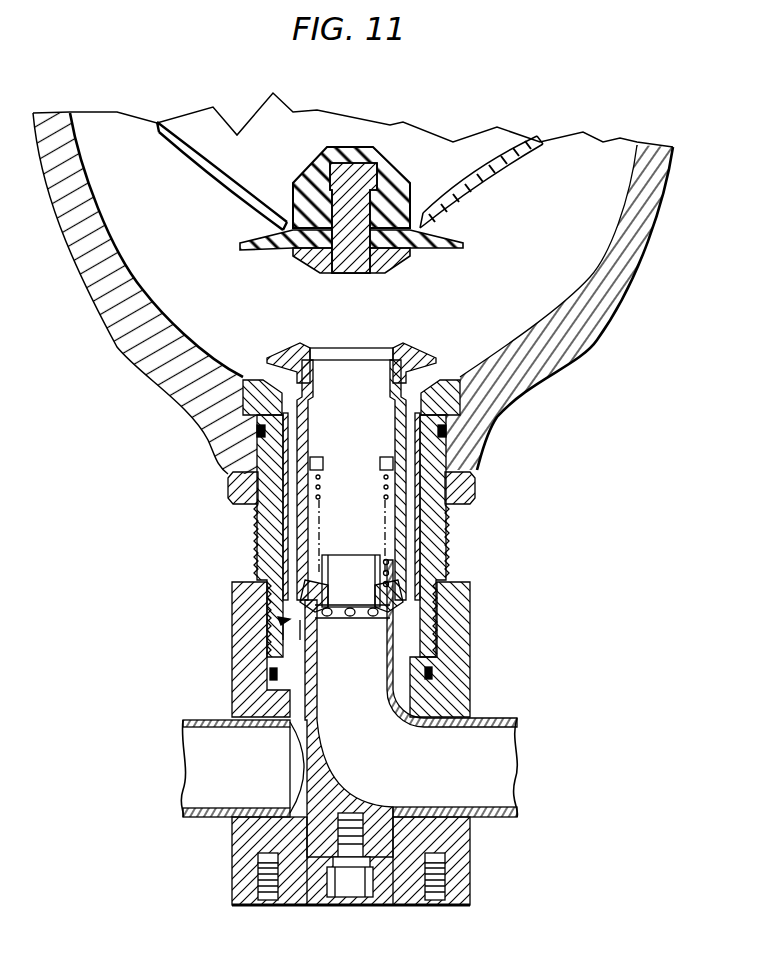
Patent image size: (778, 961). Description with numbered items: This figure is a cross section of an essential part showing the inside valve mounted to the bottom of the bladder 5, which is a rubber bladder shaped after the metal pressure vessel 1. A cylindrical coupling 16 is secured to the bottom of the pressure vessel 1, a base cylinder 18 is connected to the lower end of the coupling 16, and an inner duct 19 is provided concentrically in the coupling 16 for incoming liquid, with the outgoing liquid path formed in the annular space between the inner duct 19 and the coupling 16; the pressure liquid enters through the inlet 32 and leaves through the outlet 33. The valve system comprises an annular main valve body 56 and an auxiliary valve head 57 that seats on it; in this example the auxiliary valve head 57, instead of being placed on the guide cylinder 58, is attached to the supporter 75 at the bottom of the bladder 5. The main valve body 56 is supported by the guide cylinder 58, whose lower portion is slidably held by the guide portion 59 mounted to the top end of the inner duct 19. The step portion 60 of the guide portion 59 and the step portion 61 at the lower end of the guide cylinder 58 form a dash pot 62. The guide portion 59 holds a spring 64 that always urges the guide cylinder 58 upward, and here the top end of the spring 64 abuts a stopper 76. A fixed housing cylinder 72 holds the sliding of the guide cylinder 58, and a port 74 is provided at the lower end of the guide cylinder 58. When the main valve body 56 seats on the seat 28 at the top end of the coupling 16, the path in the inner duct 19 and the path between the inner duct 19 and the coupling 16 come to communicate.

The pressure vessel 1 is at (592, 320).
The bladder 5 is at (476, 200).
The cylindrical coupling 16 is at (433, 527).
The base cylinder 18 is at (240, 863).
The inner duct 19 is at (393, 668).
The seat 28 is at (437, 380).
The inlet 32 is at (516, 766).
The outlet 33 is at (190, 764).
The annular main valve body 56 is at (420, 352).
The auxiliary valve head 57 is at (307, 262).
The guide cylinder 58 is at (407, 551).
The guide portion 59 is at (390, 585).
The step portion 60 is at (303, 603).
The step portion 61 is at (293, 637).
The dash pot 62 is at (283, 620).
The spring 64 is at (320, 549).
The fixed housing cylinder 72 is at (300, 445).
The port 74 is at (297, 515).
The supporter 75 is at (306, 182).
The stopper 76 is at (390, 457).